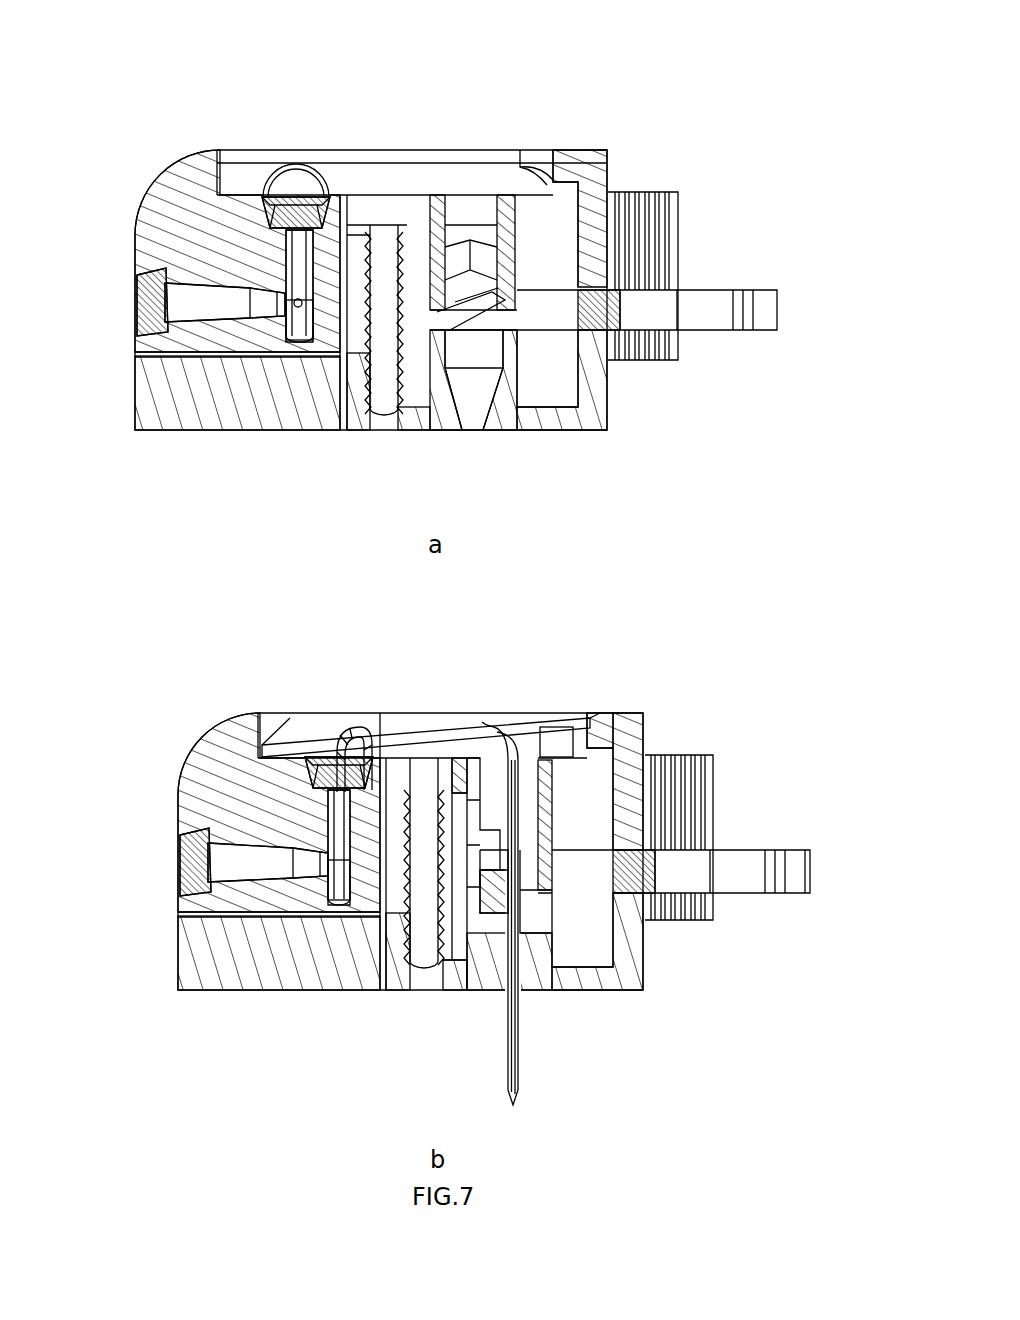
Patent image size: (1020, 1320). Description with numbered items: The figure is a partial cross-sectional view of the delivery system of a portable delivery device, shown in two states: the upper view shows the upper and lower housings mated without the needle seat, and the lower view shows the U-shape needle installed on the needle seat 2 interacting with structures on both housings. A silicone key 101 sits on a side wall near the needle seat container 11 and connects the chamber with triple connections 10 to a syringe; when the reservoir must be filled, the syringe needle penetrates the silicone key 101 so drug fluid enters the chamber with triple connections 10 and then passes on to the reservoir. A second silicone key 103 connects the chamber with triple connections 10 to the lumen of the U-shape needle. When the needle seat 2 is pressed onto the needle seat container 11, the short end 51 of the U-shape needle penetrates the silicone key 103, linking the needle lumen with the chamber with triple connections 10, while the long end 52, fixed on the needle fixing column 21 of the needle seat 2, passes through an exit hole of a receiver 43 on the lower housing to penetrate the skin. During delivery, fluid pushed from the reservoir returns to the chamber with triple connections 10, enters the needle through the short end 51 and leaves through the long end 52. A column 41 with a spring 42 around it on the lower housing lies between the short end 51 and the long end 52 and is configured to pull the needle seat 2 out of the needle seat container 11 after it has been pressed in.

The needle seat 2 is at (427, 735).
The chamber with triple connections 10 is at (207, 307).
The needle seat container 11 is at (260, 181).
The needle fixing column 21 is at (597, 765).
The column 41 is at (430, 312).
The spring 42 is at (415, 270).
The receiver 43 is at (470, 393).
The short end 51 is at (270, 792).
The long end 52 is at (520, 993).
The silicone key 101 is at (150, 270).
The silicone key 103 is at (322, 197).